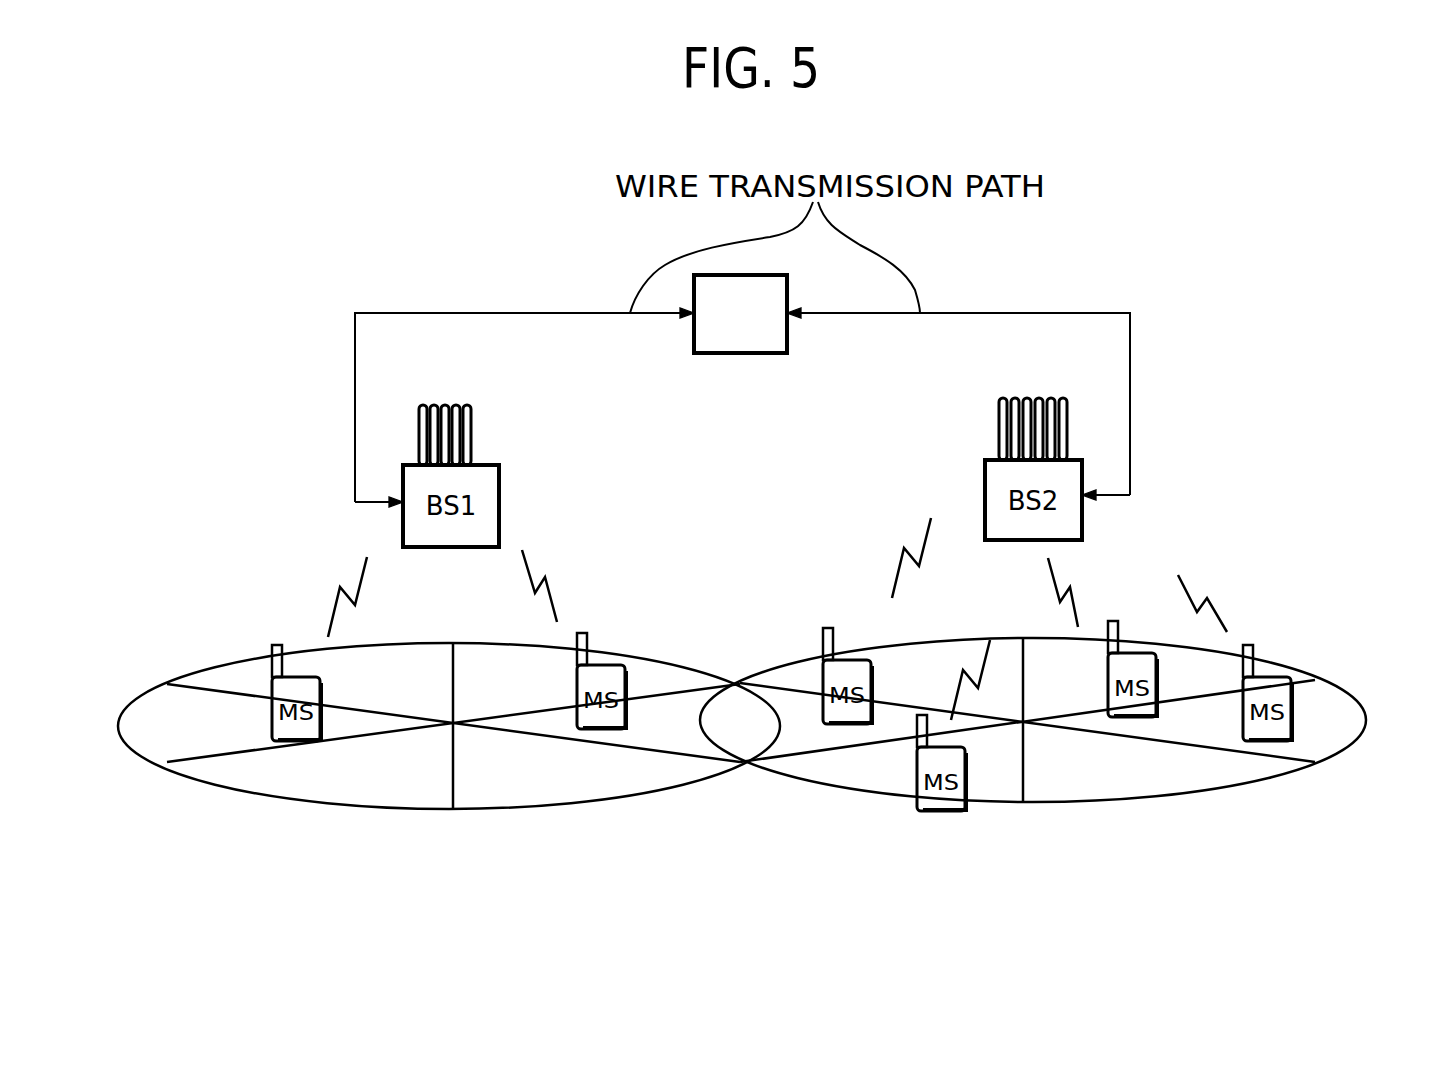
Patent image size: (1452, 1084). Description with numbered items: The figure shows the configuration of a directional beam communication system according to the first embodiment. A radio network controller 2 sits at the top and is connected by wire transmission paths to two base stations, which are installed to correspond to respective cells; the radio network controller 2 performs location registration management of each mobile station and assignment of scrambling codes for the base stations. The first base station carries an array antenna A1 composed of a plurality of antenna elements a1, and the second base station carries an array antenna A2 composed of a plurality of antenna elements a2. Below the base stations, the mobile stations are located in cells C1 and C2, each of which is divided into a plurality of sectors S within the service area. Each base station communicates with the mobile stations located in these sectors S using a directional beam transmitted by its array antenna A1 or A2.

The radio network controller 2 is at (745, 355).
The antenna elements a1 is at (432, 406).
The antenna elements a2 is at (1018, 399).
The array antenna A1 is at (512, 400).
The array antenna A2 is at (962, 396).
The sector S is at (742, 782).
The cell C1 is at (430, 822).
The cell C2 is at (1010, 820).